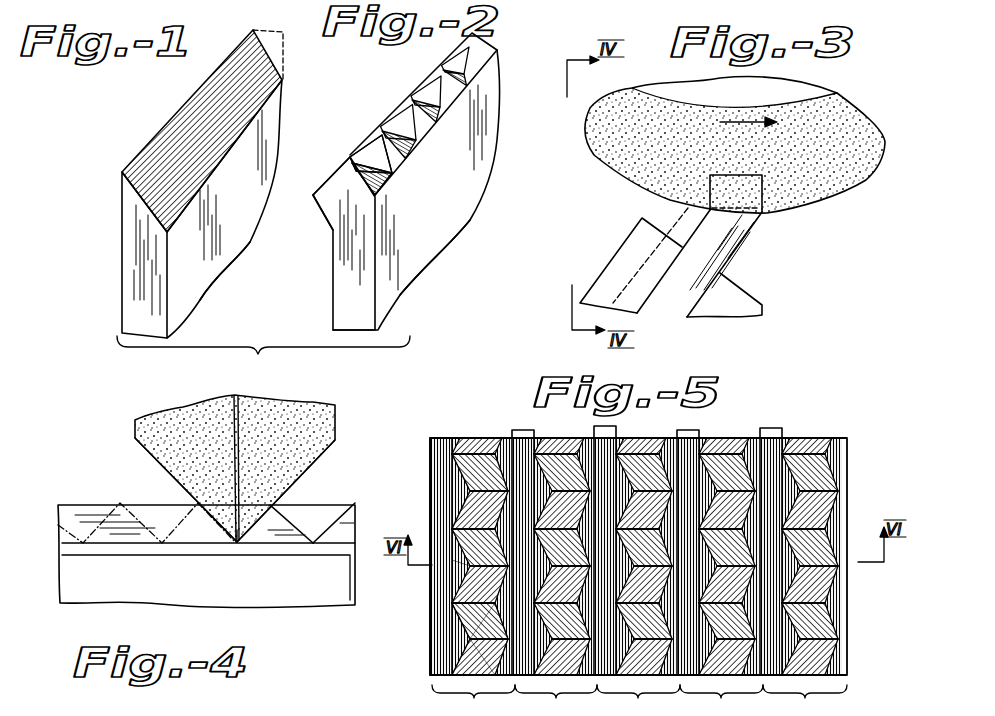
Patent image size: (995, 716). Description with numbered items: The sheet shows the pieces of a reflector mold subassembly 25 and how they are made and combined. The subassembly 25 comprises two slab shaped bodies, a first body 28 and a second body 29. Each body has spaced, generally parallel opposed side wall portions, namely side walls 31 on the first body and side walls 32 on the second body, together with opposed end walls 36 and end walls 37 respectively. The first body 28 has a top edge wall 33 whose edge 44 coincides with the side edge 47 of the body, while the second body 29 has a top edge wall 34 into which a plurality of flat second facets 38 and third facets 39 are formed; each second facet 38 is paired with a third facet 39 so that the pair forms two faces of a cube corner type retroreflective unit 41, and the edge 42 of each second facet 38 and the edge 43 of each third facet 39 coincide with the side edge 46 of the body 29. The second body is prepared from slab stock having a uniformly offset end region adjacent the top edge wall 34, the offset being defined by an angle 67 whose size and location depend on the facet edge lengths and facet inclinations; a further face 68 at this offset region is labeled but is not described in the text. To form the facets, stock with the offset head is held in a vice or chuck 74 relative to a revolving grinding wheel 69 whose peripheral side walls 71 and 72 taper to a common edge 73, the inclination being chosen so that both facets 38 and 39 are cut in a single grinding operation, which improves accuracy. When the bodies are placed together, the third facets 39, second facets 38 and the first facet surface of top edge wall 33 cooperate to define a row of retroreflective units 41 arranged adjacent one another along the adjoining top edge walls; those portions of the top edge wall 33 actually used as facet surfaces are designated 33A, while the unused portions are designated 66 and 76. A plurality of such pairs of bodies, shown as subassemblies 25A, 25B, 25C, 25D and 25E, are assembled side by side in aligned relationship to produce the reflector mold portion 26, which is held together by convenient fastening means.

In FIG. 1, the subassembly 25 is at (263, 356).
In FIG. 5, the subassembly 25A is at (473, 700).
In FIG. 5, the subassembly 25B is at (556, 700).
In FIG. 5, the subassembly 25C is at (638, 700).
In FIG. 5, the subassembly 25D is at (721, 700).
In FIG. 5, the subassembly 25E is at (805, 700).
In FIG. 5, the reflector mold portion 26 is at (765, 420).
In FIG. 1, the slab shaped body 28 is at (198, 263).
In FIG. 3, the slab shaped body 28 is at (744, 224).
In FIG. 5, the slab shaped body 28 is at (515, 434).
In FIG. 2, the slab shaped body 29 is at (416, 246).
In FIG. 5, the slab shaped body 29 is at (598, 440).
In FIG. 1, the side wall portions 31 is at (228, 235).
In FIG. 2, the side wall portions 32 is at (445, 226).
In FIG. 1, the top edge wall 33 is at (177, 120).
In FIG. 5, the top edge wall 33 is at (441, 438).
In FIG. 5, the facet surface portions 33A is at (453, 573).
In FIG. 2, the top edge wall 34 is at (500, 56).
In FIG. 4, the top edge wall 34 is at (137, 500).
In FIG. 1, the end walls 36 is at (125, 262).
In FIG. 2, the end walls 37 is at (345, 275).
In FIG. 2, the second facet 38 is at (345, 178).
In FIG. 4, the second facet 38 is at (340, 512).
In FIG. 5, the second facet 38 is at (495, 654).
In FIG. 2, the third facet 39 is at (383, 160).
In FIG. 4, the third facet 39 is at (283, 508).
In FIG. 5, the third facet 39 is at (498, 640).
In FIG. 5, the cube corner type retroreflective unit 41 is at (448, 487).
In FIG. 5, the edge of second facet 42 is at (462, 663).
In FIG. 5, the edge of third facet 43 is at (460, 618).
In FIG. 5, the edge of first facet 44 is at (482, 427).
In FIG. 5, the side edge 46 is at (460, 470).
In FIG. 1, the side edge 47 is at (210, 180).
In FIG. 5, the unused portion of top edge wall 66 is at (458, 530).
In FIG. 2, the offset angle 67 is at (330, 245).
In FIG. 2, the chamfer 68 is at (323, 176).
In FIG. 3, the grinding wheel 69 is at (620, 165).
In FIG. 4, the grinding wheel 69 is at (322, 406).
In FIG. 4, the peripheral side wall 71 is at (205, 456).
In FIG. 4, the peripheral side wall 72 is at (285, 446).
In FIG. 4, the common edge 73 is at (240, 492).
In FIG. 3, the vice or chuck 74 is at (740, 298).
In FIG. 5, the unused portion of top edge wall 76 is at (503, 600).